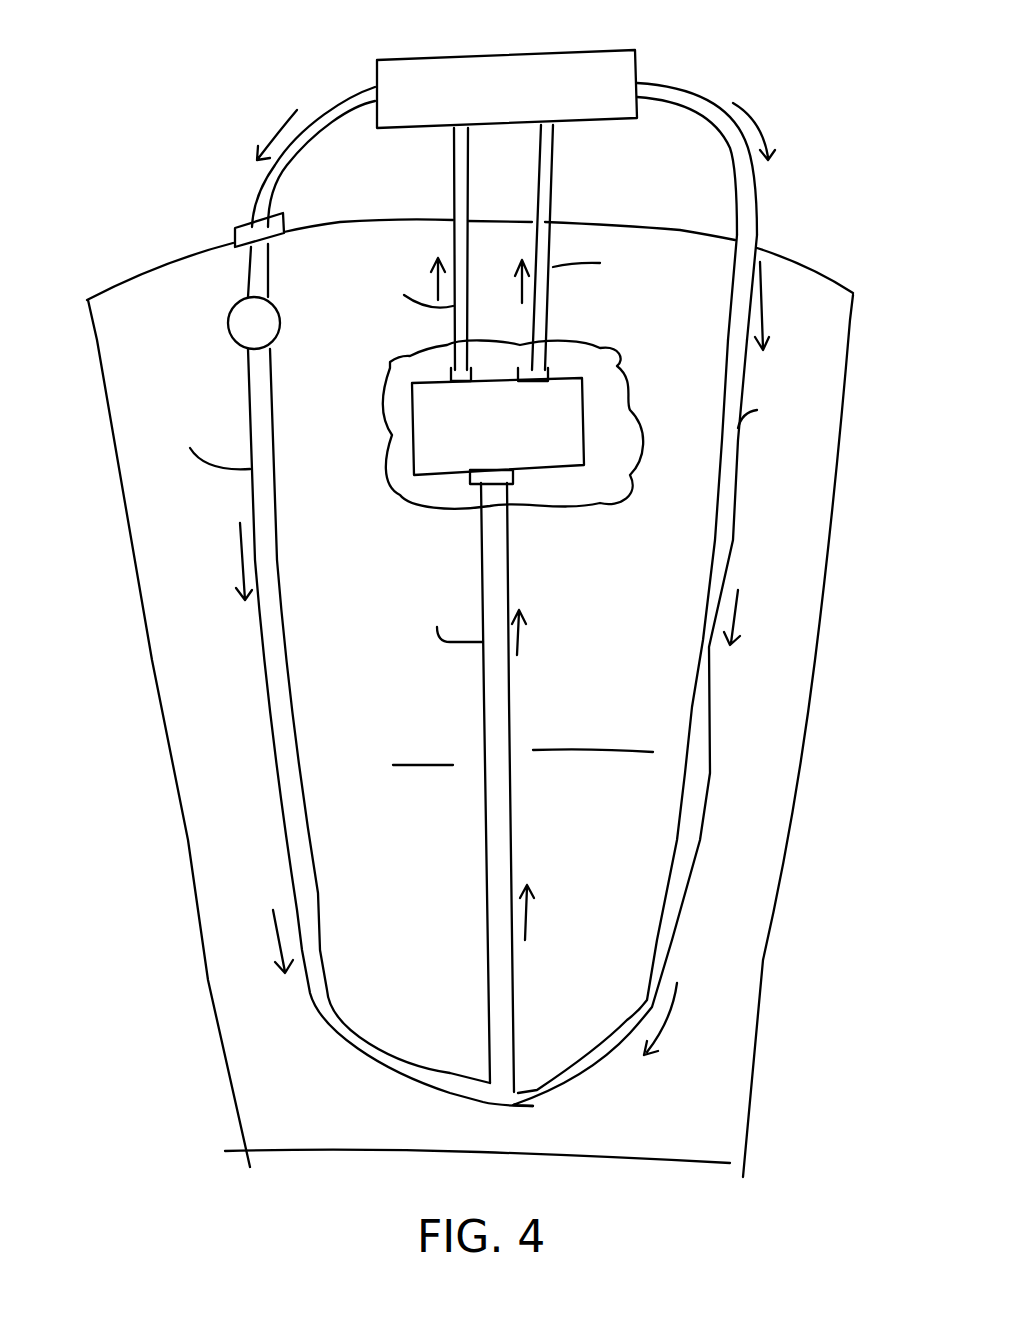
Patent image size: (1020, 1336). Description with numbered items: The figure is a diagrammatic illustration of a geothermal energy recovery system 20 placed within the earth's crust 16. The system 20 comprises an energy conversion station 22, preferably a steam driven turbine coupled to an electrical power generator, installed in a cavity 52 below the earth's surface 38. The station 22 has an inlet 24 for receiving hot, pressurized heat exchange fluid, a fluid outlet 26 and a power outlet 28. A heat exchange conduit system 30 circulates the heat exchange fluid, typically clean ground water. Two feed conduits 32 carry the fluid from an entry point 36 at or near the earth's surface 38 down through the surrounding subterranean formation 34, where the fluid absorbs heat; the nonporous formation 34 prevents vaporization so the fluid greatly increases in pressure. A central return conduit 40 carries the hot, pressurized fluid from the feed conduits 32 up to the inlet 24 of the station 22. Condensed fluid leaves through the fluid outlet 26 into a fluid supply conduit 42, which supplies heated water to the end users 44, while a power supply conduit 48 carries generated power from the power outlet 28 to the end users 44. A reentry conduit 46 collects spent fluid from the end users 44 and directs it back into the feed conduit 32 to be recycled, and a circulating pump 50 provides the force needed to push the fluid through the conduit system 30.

The crust 16 is at (773, 765).
The geothermal energy recovery system 20 is at (730, 79).
The energy conversion station 22 is at (583, 400).
The inlet 24 is at (513, 476).
The fluid outlet 26 is at (392, 370).
The power outlet 28 is at (575, 352).
The heat exchange conduit system 30 is at (772, 212).
The feed conduit 32 is at (270, 636).
The subterranean formation 34 is at (430, 884).
The entry point 36 is at (235, 236).
The earth's surface 38 is at (790, 258).
The return conduit 40 is at (492, 556).
The fluid supply conduit 42 is at (455, 167).
The end users 44 is at (487, 55).
The reentry conduit 46 is at (338, 100).
The power supply conduit 48 is at (547, 160).
The circulating pump 50 is at (228, 320).
The cavity 52 is at (618, 447).